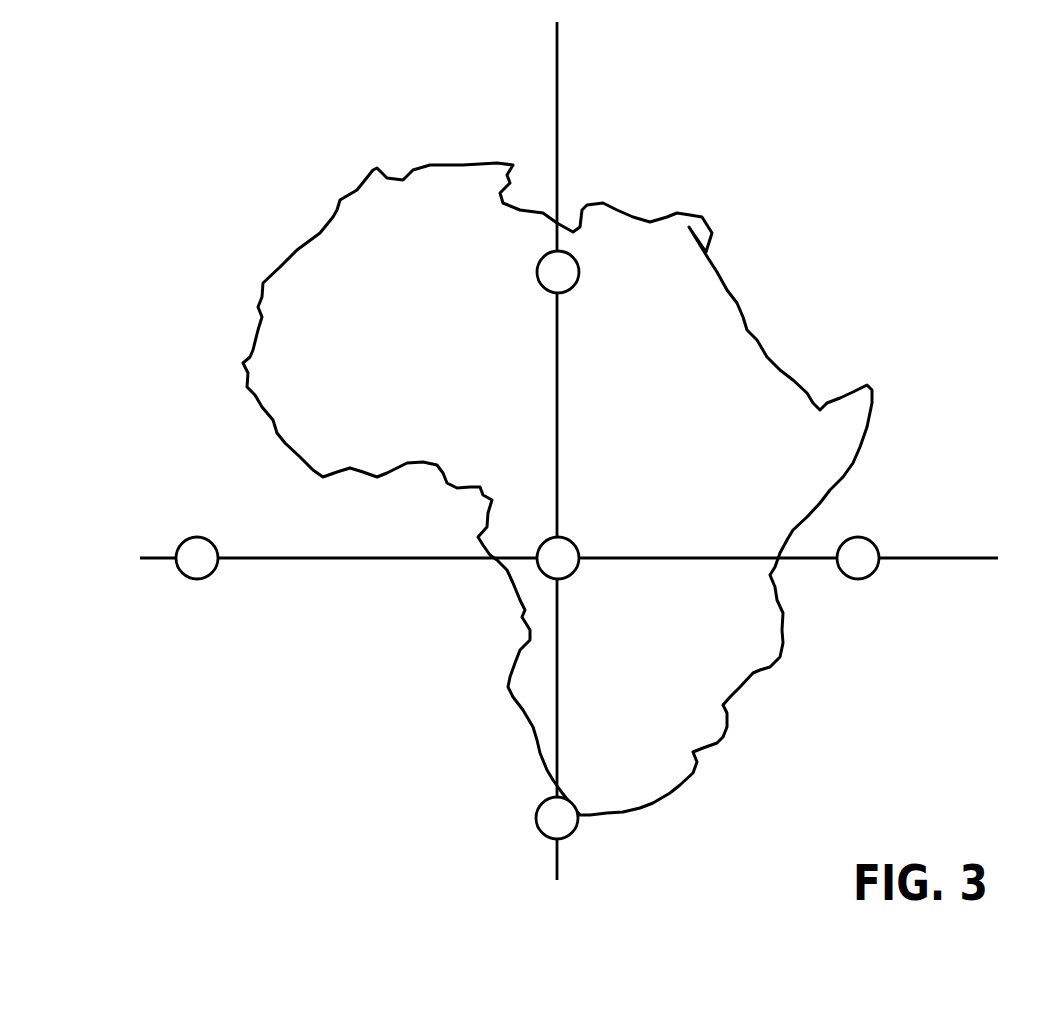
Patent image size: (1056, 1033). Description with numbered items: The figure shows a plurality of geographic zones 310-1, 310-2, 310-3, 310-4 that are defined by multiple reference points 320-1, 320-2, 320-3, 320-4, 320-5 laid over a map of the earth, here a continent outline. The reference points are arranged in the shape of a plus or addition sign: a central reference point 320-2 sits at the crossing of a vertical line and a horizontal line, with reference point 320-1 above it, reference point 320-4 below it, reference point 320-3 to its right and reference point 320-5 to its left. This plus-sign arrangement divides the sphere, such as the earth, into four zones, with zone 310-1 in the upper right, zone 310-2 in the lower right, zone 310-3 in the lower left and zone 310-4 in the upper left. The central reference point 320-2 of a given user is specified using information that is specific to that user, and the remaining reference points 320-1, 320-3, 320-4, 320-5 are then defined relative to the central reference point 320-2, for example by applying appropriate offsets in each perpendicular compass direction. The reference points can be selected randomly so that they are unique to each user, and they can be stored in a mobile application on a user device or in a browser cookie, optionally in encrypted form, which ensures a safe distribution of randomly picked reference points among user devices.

The geographic zone 310-1 is at (816, 92).
The geographic zone 310-2 is at (816, 820).
The geographic zone 310-3 is at (348, 820).
The geographic zone 310-4 is at (348, 92).
The reference point 320-1 is at (575, 262).
The central reference point 320-2 is at (577, 545).
The reference point 320-3 is at (875, 546).
The reference point 320-4 is at (574, 831).
The reference point 320-5 is at (215, 546).